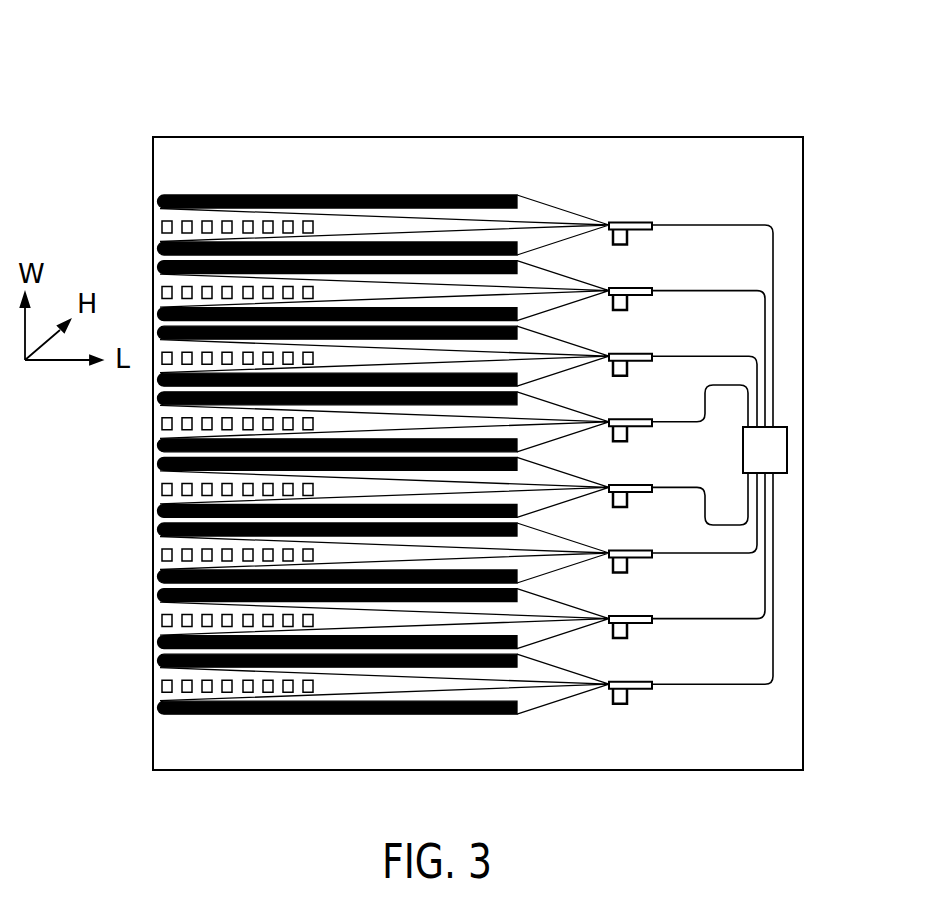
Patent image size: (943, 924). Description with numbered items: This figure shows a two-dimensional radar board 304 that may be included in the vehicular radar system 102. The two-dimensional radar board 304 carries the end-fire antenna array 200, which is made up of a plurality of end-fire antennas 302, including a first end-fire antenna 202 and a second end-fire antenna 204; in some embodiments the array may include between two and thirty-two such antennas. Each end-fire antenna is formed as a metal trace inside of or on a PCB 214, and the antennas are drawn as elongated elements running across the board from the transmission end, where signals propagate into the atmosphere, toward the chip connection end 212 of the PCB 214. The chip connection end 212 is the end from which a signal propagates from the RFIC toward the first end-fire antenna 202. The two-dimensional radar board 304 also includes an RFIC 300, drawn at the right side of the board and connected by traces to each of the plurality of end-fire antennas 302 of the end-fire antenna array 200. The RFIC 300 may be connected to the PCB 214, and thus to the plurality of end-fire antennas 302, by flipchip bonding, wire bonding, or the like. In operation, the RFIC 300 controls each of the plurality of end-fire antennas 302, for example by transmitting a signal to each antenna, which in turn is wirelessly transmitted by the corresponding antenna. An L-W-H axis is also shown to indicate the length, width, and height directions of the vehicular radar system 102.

The vehicular radar system 102 is at (258, 97).
The end-fire antenna array 200 is at (152, 172).
The first end-fire antenna 202 is at (558, 203).
The second end-fire antenna 204 is at (558, 270).
The chip connection end 212 is at (786, 247).
The PCB 214 is at (688, 142).
The RFIC 300 is at (788, 452).
The plurality of end-fire antennas 302 is at (215, 160).
The two-dimensional radar board 304 is at (519, 108).